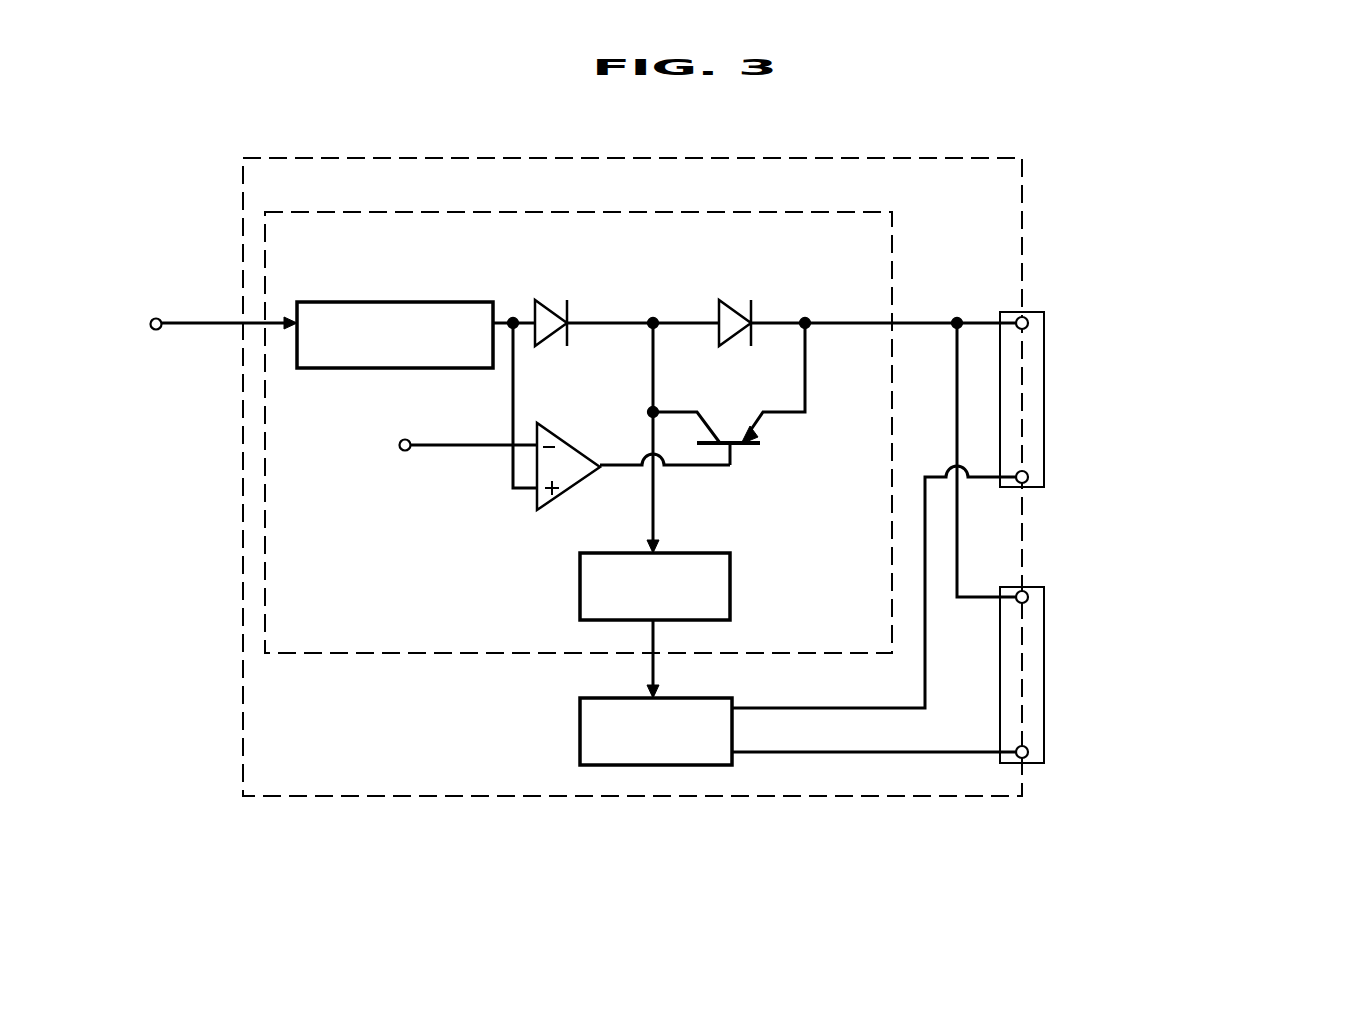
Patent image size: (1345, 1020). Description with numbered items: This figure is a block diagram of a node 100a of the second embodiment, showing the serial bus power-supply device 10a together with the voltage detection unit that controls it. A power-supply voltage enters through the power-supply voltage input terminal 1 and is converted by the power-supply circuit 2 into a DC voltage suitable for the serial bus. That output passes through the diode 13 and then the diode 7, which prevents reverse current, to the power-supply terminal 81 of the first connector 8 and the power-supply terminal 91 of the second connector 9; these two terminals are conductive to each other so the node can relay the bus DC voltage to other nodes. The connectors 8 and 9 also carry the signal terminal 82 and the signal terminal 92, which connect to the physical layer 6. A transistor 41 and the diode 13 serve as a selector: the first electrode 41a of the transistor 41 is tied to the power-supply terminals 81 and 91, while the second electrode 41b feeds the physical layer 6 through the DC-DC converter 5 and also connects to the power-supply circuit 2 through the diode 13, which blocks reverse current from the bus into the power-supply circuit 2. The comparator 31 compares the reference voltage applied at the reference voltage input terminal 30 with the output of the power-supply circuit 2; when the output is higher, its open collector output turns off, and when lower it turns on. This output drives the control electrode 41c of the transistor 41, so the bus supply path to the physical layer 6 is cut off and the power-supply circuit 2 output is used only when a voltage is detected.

The node 100a is at (355, 138).
The bus power-supply device 10a is at (503, 212).
The power-supply voltage input terminal 1 is at (152, 329).
The power-supply circuit 2 is at (475, 302).
The diode 13 is at (538, 302).
The diode 7 is at (722, 300).
The reference voltage input terminal 30 is at (409, 441).
The comparator 31 is at (570, 446).
The transistor 41 is at (739, 417).
The first electrode 41a is at (762, 410).
The second electrode 41b is at (676, 411).
The control electrode 41c is at (731, 467).
The DC-DC converter 5 is at (698, 553).
The physical layer 6 is at (580, 715).
The connector 8 is at (1160, 377).
The power-supply terminal 81 is at (1027, 317).
The signal terminal 82 is at (1027, 471).
The connector 9 is at (1172, 652).
The power-supply terminal 91 is at (1027, 591).
The signal terminal 92 is at (1027, 746).